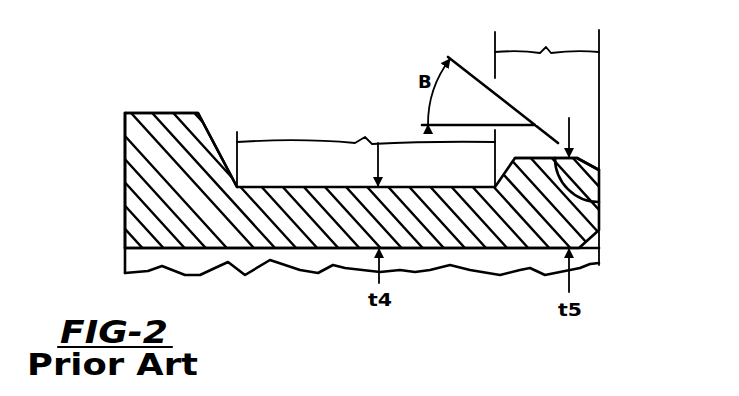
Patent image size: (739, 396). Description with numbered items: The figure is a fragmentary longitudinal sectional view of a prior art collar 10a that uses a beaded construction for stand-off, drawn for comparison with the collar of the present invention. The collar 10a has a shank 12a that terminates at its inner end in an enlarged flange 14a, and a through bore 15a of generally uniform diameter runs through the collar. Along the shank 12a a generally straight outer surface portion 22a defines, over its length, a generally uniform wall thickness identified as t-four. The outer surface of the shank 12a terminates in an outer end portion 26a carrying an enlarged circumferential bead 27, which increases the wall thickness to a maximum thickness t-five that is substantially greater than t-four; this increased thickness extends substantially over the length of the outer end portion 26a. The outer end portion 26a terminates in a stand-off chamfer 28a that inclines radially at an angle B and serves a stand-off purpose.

The collar 10a is at (272, 107).
The shank 12a is at (295, 195).
The enlarged flange 14a is at (152, 118).
The through bore 15a is at (125, 273).
The straight outer surface portion 22a is at (366, 148).
The outer end portion 26a is at (547, 141).
The enlarged circumferential bead 27 is at (600, 205).
The stand-off chamfer 28a is at (583, 162).